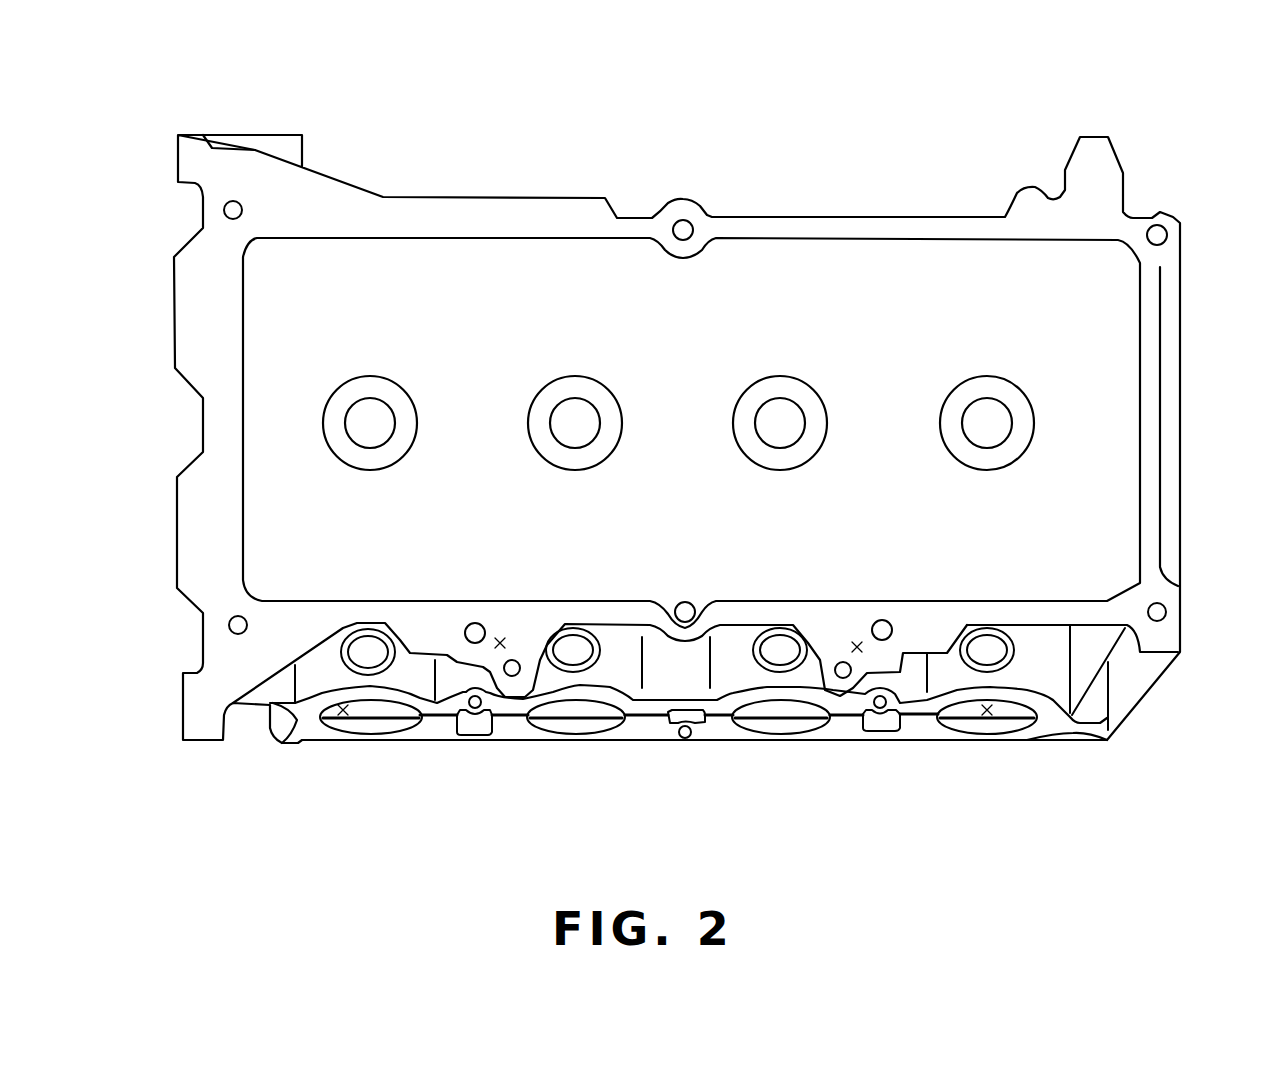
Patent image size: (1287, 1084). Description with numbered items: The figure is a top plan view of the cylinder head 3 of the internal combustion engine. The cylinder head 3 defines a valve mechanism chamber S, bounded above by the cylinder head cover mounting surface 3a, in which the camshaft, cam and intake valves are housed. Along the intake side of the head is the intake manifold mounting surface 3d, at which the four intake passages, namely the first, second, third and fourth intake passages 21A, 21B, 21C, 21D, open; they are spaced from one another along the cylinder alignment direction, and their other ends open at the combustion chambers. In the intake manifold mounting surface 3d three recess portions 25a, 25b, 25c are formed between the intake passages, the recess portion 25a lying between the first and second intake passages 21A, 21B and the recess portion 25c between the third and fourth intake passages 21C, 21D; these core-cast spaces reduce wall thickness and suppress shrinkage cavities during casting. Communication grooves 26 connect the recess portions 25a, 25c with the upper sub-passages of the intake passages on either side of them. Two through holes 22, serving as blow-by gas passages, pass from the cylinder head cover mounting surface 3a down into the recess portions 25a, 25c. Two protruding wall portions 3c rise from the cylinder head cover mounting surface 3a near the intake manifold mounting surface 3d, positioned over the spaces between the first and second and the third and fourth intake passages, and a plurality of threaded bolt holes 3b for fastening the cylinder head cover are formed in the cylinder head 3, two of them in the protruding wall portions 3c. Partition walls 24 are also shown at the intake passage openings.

The cylinder head 3 is at (431, 195).
The valve mechanism chamber S is at (495, 326).
The cylinder head cover mounting surface 3a is at (1050, 612).
The threaded bolt holes 3b is at (245, 616).
The protruding wall portions 3c is at (500, 640).
The intake manifold mounting surface 3d is at (716, 729).
The first intake passage 21A is at (343, 722).
The second intake passage 21B is at (602, 722).
The third intake passage 21C is at (795, 722).
The fourth intake passage 21D is at (987, 722).
The through holes 22 is at (474, 622).
The partition wall of port 24 is at (383, 722).
The recess portion 25a is at (465, 736).
The recess portion 25b is at (676, 725).
The recess portion 25c is at (885, 732).
The communication groove 26 is at (433, 719).